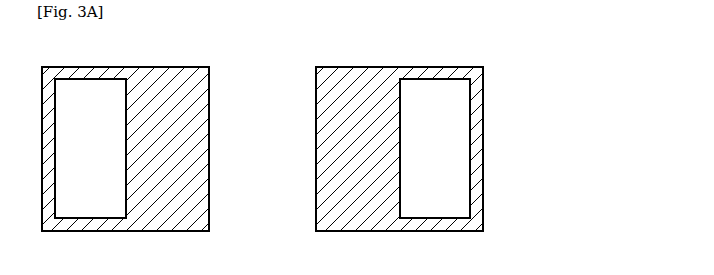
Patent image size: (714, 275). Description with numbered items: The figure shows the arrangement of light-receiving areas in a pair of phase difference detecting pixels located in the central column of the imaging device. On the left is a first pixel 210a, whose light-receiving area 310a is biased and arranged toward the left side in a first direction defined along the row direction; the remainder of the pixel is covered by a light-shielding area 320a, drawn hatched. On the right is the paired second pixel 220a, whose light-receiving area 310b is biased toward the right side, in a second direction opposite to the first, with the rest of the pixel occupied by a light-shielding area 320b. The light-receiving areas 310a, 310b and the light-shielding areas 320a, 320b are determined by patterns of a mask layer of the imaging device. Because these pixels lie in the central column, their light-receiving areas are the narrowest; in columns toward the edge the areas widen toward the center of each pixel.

The first pixel 210a is at (163, 66).
The second pixel 220a is at (437, 66).
The light-receiving area 310a is at (92, 200).
The light-receiving area 310b is at (445, 213).
The light-shielding area 320a is at (171, 215).
The light-shielding area 320b is at (366, 198).